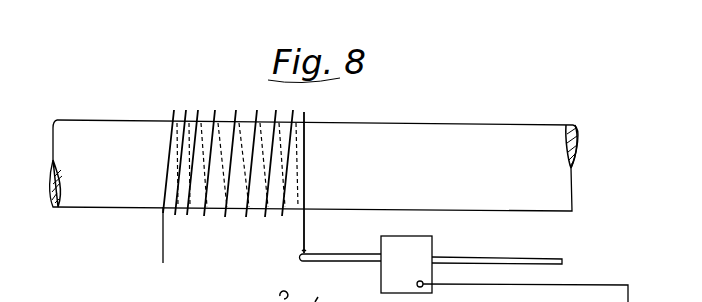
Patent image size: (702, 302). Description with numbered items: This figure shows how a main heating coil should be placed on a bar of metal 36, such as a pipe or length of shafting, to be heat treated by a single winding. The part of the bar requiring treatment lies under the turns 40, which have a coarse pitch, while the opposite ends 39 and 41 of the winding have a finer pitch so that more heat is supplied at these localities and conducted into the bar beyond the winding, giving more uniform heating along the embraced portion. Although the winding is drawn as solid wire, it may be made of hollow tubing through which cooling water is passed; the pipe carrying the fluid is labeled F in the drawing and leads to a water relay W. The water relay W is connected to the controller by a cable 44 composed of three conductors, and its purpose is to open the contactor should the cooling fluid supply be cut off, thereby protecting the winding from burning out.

The bar of metal 36 is at (130, 133).
The finer-pitch end turns 39 is at (175, 111).
The coarse-pitch turns 40 is at (238, 98).
The finer-pitch end turns 41 is at (293, 111).
The water relay W is at (406, 264).
The feed conduit F is at (497, 257).
The cable 44 is at (612, 286).